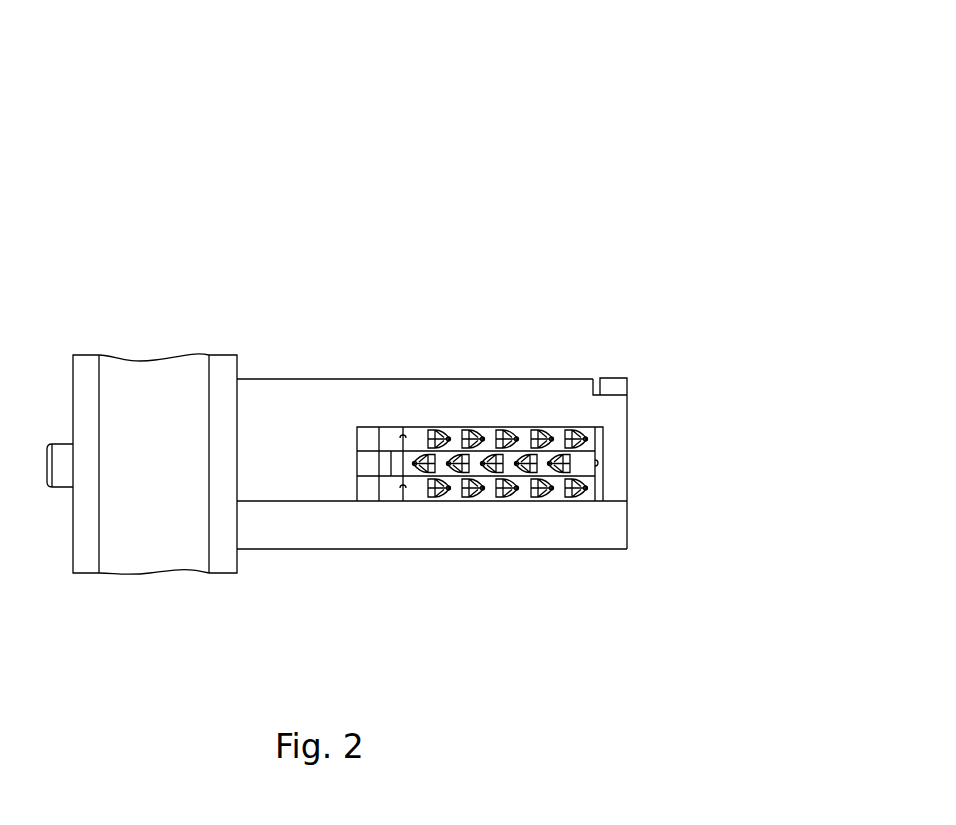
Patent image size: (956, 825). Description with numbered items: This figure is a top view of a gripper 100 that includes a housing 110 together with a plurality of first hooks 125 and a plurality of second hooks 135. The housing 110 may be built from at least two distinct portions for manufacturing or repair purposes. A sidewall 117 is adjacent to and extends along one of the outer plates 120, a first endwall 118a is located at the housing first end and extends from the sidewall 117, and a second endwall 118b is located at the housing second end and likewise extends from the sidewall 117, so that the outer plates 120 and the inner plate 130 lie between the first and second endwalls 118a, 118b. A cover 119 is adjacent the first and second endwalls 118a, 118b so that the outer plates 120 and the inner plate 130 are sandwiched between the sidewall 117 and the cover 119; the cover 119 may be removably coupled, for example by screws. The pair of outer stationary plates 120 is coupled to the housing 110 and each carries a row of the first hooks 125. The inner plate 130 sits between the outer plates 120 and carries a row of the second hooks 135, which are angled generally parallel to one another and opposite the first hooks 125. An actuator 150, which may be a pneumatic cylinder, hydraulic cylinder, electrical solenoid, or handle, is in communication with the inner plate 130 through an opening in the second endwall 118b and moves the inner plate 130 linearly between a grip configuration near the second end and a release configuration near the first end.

The gripper 100 is at (548, 142).
The housing 110 is at (590, 369).
The sidewall 117 is at (434, 395).
The first endwall 118a is at (617, 457).
The second endwall 118b is at (295, 393).
The cover 119 is at (319, 537).
The outer stationary plates 120 is at (525, 432).
The first hooks 125 is at (578, 438).
The inner plate 130 is at (472, 460).
The second hooks 135 is at (570, 465).
The actuator 150 is at (135, 376).